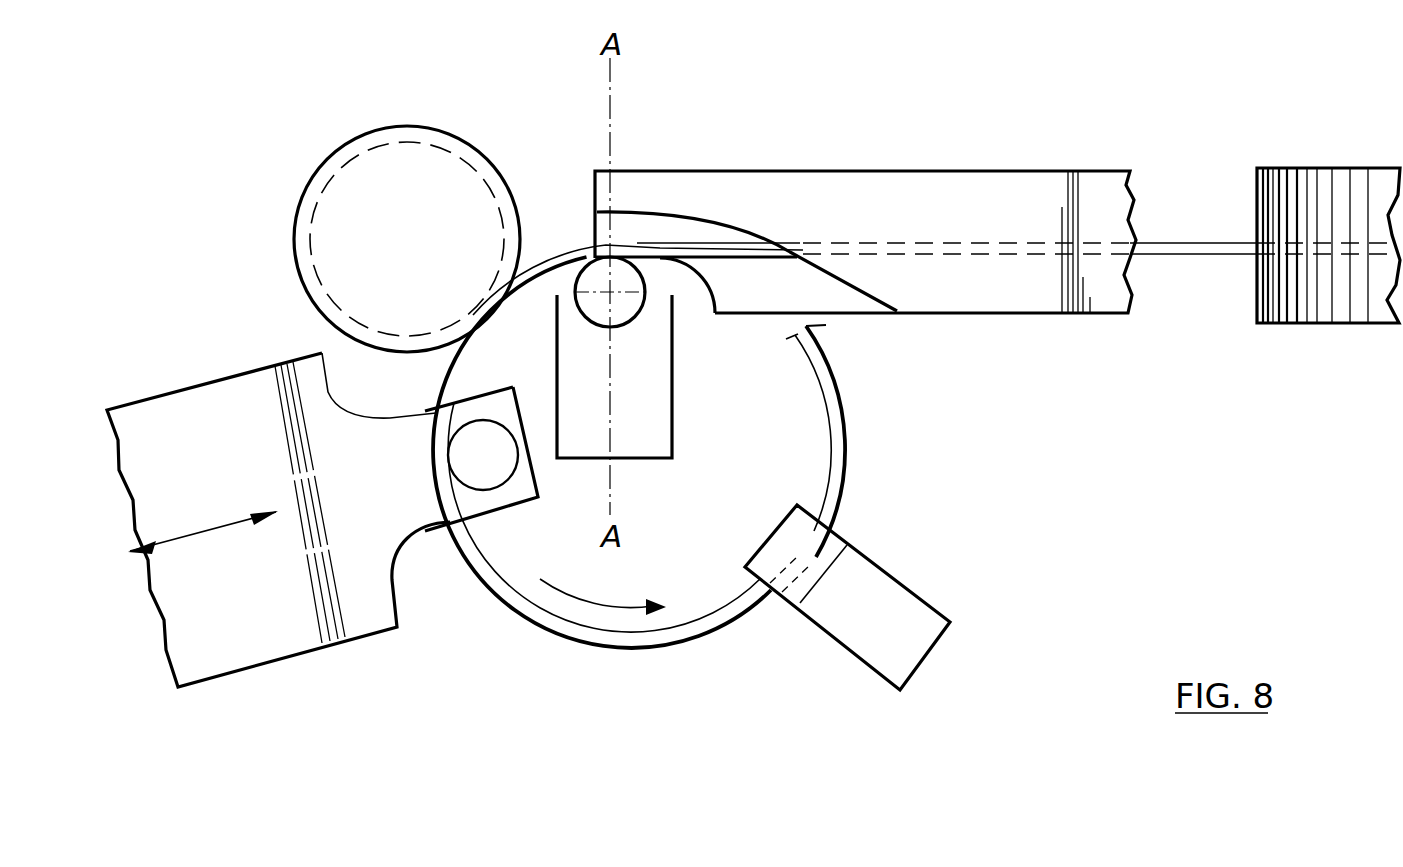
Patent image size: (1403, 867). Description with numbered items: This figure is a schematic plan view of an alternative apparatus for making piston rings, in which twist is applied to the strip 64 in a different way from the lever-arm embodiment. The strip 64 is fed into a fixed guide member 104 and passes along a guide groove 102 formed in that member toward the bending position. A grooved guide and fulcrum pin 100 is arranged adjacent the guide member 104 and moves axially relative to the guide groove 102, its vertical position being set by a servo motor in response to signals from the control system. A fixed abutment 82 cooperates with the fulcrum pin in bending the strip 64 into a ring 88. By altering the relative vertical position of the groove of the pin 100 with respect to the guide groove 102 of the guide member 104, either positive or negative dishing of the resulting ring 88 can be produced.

The fixed abutment 82 is at (436, 175).
The ring 88 is at (590, 637).
The grooved guide and fulcrum pin 100 is at (627, 312).
The guide groove 102 is at (637, 248).
The fixed guide member 104 is at (937, 188).
The strip 64 is at (1180, 243).